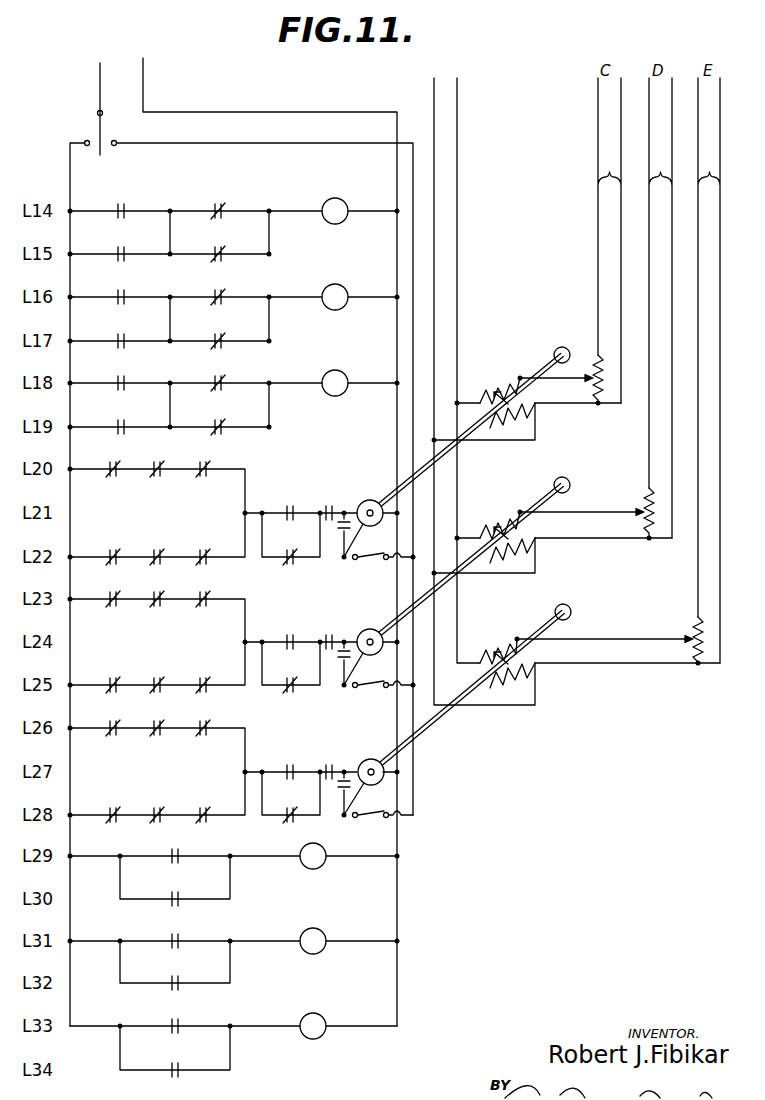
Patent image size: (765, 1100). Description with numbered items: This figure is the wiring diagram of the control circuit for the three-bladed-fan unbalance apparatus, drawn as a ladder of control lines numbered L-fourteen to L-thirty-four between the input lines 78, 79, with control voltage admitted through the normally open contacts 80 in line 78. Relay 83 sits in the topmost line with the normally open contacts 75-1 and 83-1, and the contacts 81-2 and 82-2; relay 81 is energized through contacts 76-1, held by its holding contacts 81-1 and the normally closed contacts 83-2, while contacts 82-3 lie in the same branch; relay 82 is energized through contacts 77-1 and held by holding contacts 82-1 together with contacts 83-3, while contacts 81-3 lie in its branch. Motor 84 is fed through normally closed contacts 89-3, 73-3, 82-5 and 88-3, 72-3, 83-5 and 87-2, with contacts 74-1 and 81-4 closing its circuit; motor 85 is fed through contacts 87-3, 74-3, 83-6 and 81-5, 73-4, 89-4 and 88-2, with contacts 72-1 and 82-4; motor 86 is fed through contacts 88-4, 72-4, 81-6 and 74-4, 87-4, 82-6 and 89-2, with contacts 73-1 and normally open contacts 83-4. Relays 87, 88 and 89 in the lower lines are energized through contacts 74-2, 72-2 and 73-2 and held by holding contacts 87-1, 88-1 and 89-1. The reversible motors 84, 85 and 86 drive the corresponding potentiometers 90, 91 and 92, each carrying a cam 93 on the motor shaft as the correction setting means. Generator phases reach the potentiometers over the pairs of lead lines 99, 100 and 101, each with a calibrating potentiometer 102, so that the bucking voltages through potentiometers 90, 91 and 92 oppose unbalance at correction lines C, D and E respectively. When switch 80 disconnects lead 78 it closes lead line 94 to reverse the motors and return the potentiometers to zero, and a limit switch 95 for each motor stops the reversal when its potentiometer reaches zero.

The input line 78 is at (70, 161).
The input line 79 is at (396, 249).
The normally open contacts 80 is at (98, 116).
The relay 81 is at (335, 287).
The relay 82 is at (335, 373).
The relay 83 is at (335, 200).
The motor 84 is at (370, 503).
The motor 85 is at (370, 632).
The motor 86 is at (371, 762).
The relay 87 is at (313, 846).
The relay 88 is at (313, 931).
The relay 89 is at (313, 1016).
The potentiometer 90 is at (497, 386).
The potentiometer 91 is at (497, 517).
The potentiometer 92 is at (497, 642).
The cam 93 is at (556, 348).
The lead line 94 is at (306, 143).
The limit switch 95 is at (377, 674).
The pair of lead lines 99 is at (609, 240).
The pair of lead lines 100 is at (663, 308).
The pair of lead lines 101 is at (712, 370).
The calibrating potentiometer 102 is at (595, 388).
The normally open contacts 75-1 is at (120, 202).
The contacts 76-1 is at (120, 288).
The contacts 77-1 is at (120, 374).
The holding contacts 81-1 is at (120, 332).
The contacts 81-2 is at (217, 202).
The contacts 81-3 is at (217, 419).
The contacts 81-4 is at (328, 504).
The contacts 81-5 is at (112, 677).
The contacts 81-6 is at (202, 720).
The holding contacts 82-1 is at (120, 418).
The contacts 82-2 is at (217, 246).
The contacts 82-3 is at (217, 333).
The contacts 82-4 is at (328, 633).
The contacts 82-5 is at (202, 461).
The contacts 82-6 is at (202, 807).
The holding contacts 83-1 is at (120, 245).
The normally closed contacts 83-2 is at (217, 288).
The normally closed contacts 83-3 is at (217, 374).
The normally open contacts 83-4 is at (328, 763).
The normally closed contacts 83-5 is at (202, 548).
The normally closed contacts 83-6 is at (202, 591).
The contacts 72-1 is at (289, 633).
The contacts 72-2 is at (184, 933).
The normally closed contacts 72-3 is at (156, 548).
The contacts 72-4 is at (156, 720).
The contacts 73-1 is at (289, 763).
The contacts 73-2 is at (184, 1018).
The contacts 73-3 is at (156, 461).
The contacts 73-4 is at (156, 677).
The contacts 74-1 is at (289, 504).
The contacts 74-2 is at (174, 847).
The normally closed contacts 74-3 is at (156, 591).
The contacts 74-4 is at (112, 807).
The holding contacts 87-1 is at (174, 891).
The normally closed contacts 87-2 is at (289, 549).
The normally closed contacts 87-3 is at (112, 591).
The contacts 87-4 is at (156, 807).
The holding contacts 88-1 is at (184, 975).
The contacts 88-2 is at (289, 677).
The normally closed contacts 88-3 is at (112, 548).
The contacts 88-4 is at (112, 720).
The holding contacts 89-1 is at (184, 1061).
The contacts 89-2 is at (289, 807).
The contacts 89-3 is at (112, 461).
The contacts 89-4 is at (202, 677).